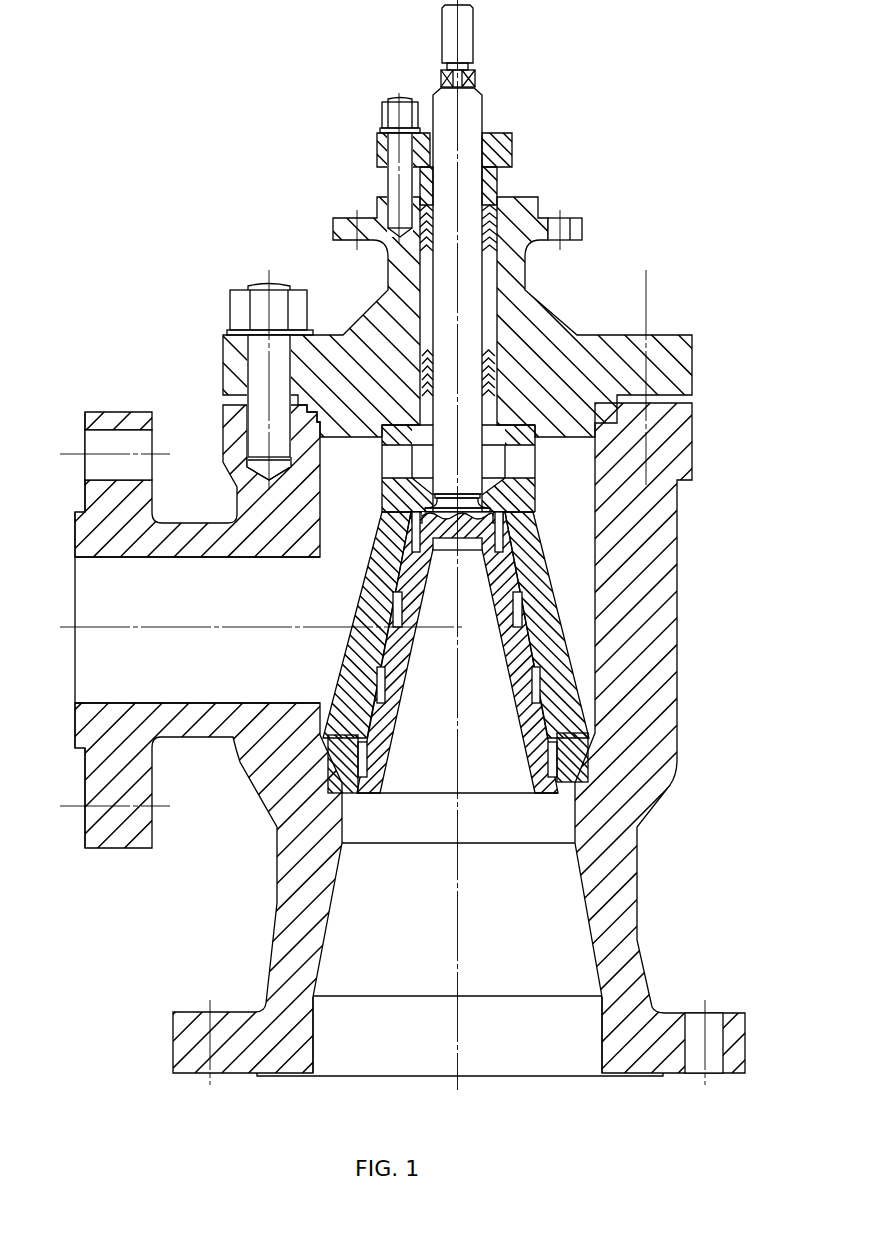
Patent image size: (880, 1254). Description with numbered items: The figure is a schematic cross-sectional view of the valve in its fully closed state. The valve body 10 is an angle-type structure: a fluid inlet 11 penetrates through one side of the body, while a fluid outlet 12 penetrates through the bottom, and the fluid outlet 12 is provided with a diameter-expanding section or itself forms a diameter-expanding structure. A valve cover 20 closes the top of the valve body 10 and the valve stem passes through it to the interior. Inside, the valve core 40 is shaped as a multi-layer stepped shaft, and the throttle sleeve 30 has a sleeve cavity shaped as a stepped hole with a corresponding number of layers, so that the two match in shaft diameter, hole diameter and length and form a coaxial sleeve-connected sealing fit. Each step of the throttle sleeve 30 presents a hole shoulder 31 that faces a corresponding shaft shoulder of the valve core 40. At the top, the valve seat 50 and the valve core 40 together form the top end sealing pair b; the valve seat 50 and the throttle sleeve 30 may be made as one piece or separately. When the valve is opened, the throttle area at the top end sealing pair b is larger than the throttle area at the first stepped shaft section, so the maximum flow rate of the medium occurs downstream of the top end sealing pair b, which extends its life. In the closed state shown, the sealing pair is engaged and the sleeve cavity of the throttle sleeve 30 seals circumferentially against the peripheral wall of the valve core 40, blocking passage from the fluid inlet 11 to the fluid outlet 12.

The valve body 10 is at (677, 602).
The fluid inlet 11 is at (118, 690).
The fluid outlet 12 is at (590, 978).
The valve cover 20 is at (668, 335).
The throttle sleeve 30 is at (545, 550).
The hole shoulder 31 is at (547, 733).
The valve core 40 is at (528, 757).
The valve seat 50 is at (535, 450).
The top end sealing pair b is at (492, 508).